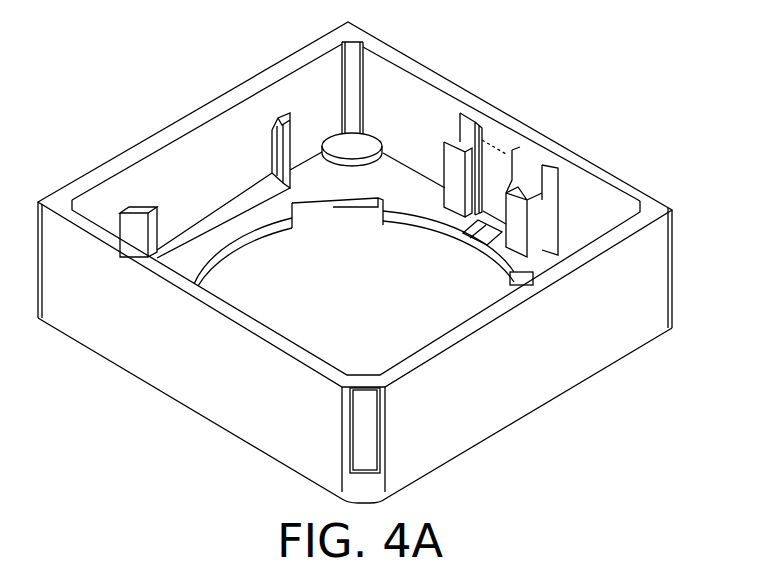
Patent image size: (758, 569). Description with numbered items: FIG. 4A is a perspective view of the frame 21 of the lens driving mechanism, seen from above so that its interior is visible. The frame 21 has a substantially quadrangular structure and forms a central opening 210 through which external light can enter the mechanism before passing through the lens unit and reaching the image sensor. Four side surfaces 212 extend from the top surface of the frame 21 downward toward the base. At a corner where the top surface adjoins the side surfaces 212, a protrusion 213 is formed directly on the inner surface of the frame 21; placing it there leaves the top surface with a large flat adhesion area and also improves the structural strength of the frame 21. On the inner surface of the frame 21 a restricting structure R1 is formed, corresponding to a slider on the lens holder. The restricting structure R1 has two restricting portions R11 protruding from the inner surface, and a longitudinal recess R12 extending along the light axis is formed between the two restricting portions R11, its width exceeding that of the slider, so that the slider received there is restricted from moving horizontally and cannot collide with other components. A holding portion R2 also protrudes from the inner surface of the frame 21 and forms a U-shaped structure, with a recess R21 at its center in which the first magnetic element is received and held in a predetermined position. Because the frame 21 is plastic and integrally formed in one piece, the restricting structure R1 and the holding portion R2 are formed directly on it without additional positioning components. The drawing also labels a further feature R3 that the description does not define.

The frame 21 is at (360, 251).
The opening 210 is at (297, 303).
The side surfaces 212 is at (283, 57).
The protrusion 213 is at (367, 140).
The restricting structure R1 is at (537, 134).
The restricting portions R11 is at (467, 132).
The recess R12 is at (500, 148).
The holding portion R2 is at (138, 207).
The recess R21 is at (182, 213).
The third positioning structure R3 is at (487, 230).